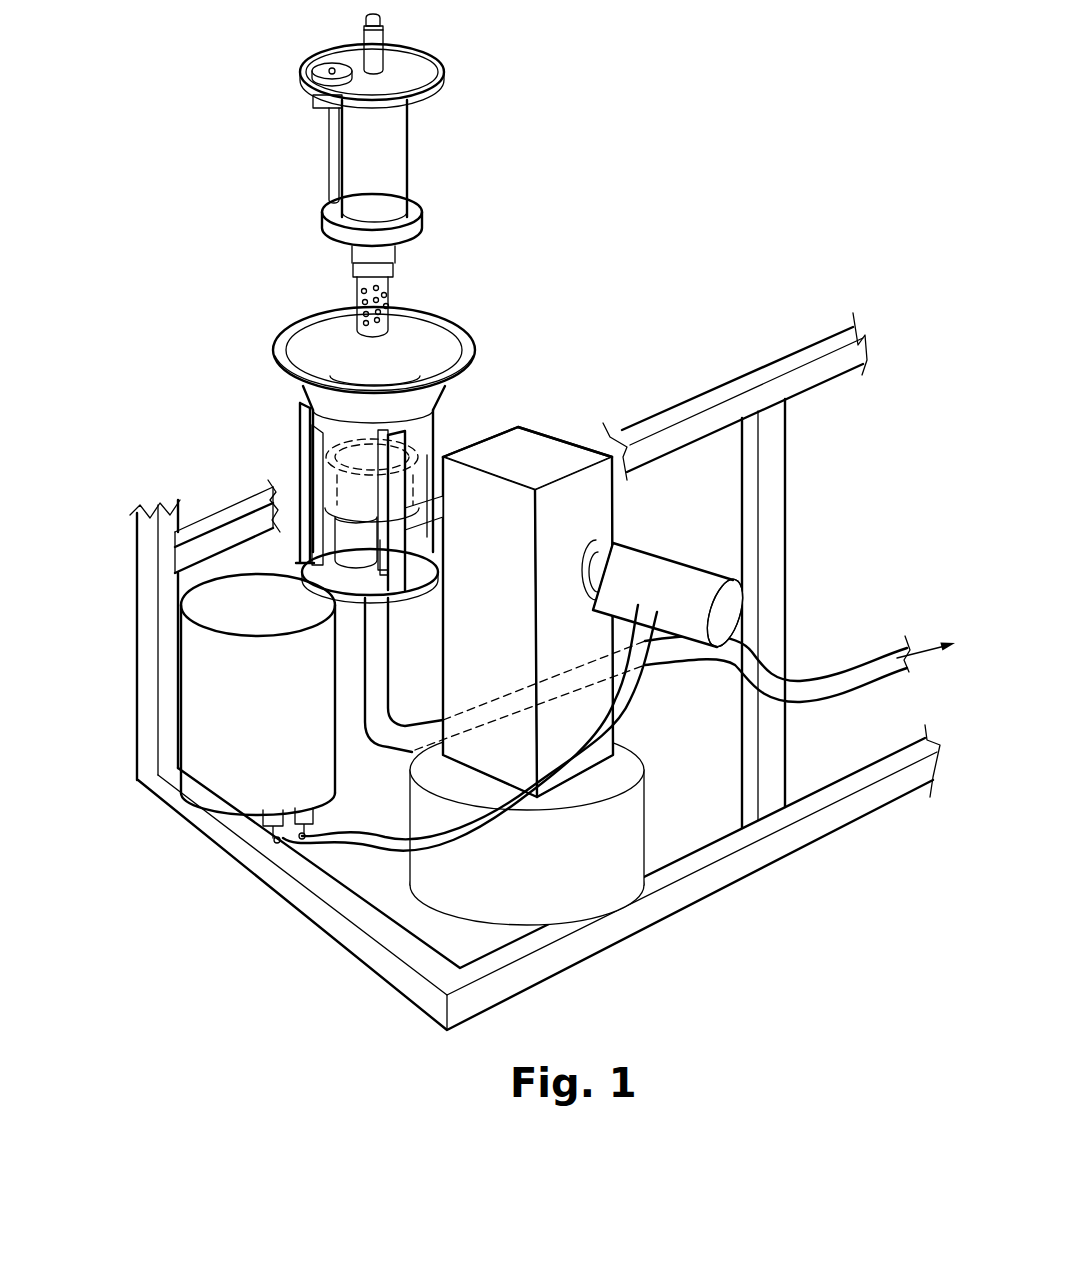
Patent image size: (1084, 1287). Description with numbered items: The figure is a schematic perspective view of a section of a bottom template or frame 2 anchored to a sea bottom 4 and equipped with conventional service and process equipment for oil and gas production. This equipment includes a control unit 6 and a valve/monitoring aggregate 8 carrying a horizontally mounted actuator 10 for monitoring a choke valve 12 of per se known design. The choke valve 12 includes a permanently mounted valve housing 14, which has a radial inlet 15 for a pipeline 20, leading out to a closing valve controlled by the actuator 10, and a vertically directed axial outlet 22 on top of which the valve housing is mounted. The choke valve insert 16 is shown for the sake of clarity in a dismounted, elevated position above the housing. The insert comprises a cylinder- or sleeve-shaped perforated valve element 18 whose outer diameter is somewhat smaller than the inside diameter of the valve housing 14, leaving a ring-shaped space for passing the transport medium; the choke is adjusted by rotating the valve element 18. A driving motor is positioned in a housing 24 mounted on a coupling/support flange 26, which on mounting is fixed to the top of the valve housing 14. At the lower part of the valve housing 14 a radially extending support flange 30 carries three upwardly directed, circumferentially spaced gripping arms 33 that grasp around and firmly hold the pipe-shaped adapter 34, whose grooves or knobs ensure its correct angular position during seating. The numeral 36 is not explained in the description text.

The bottom template or frame 2 is at (745, 862).
The sea bottom 4 is at (690, 990).
The control unit 6 is at (213, 787).
The valve/monitoring aggregate 8 is at (593, 508).
The actuator 10 is at (690, 602).
The choke valve 12 is at (432, 434).
The valve housing 14 is at (270, 507).
The radial inlet 15 is at (380, 572).
The choke valve insert 16 is at (418, 128).
The perforated valve element 18 is at (383, 302).
The pipeline 20 is at (440, 500).
The axial outlet 22 is at (375, 703).
The housing 24 is at (390, 170).
The coupling/support flange 26 is at (423, 215).
The support flange 30 is at (345, 540).
The gripping arms 33 is at (310, 457).
The adapter 34 is at (300, 403).
The funnel rim 36 is at (303, 327).